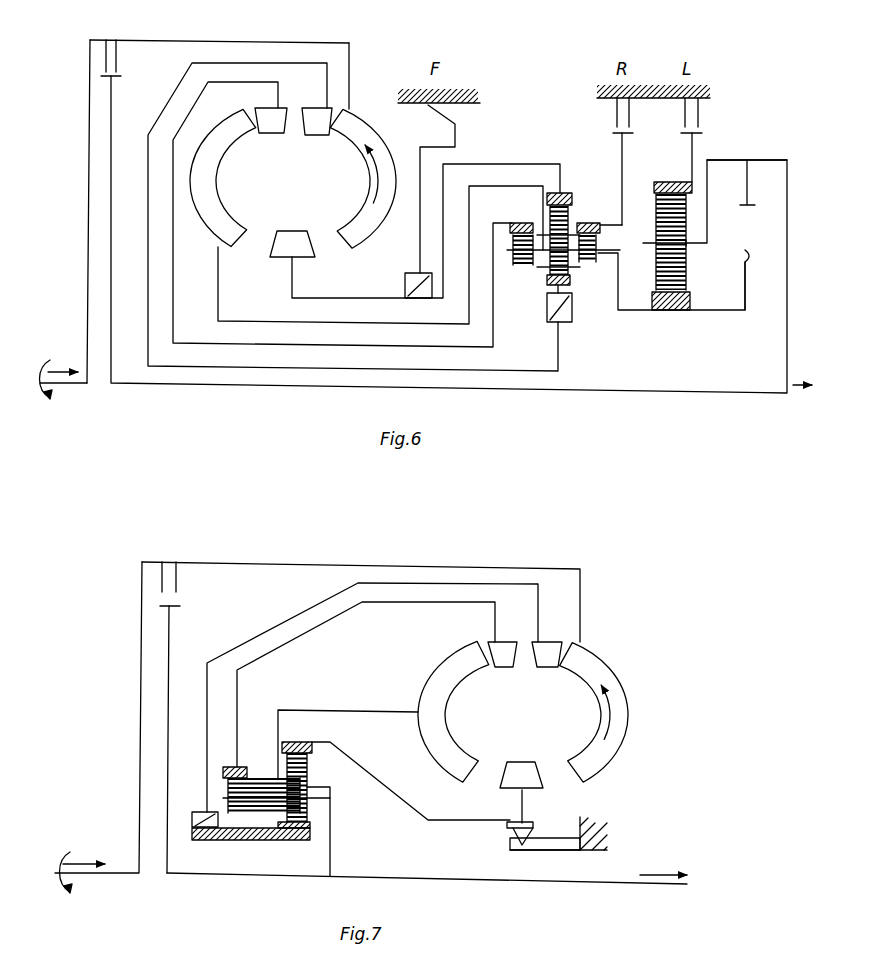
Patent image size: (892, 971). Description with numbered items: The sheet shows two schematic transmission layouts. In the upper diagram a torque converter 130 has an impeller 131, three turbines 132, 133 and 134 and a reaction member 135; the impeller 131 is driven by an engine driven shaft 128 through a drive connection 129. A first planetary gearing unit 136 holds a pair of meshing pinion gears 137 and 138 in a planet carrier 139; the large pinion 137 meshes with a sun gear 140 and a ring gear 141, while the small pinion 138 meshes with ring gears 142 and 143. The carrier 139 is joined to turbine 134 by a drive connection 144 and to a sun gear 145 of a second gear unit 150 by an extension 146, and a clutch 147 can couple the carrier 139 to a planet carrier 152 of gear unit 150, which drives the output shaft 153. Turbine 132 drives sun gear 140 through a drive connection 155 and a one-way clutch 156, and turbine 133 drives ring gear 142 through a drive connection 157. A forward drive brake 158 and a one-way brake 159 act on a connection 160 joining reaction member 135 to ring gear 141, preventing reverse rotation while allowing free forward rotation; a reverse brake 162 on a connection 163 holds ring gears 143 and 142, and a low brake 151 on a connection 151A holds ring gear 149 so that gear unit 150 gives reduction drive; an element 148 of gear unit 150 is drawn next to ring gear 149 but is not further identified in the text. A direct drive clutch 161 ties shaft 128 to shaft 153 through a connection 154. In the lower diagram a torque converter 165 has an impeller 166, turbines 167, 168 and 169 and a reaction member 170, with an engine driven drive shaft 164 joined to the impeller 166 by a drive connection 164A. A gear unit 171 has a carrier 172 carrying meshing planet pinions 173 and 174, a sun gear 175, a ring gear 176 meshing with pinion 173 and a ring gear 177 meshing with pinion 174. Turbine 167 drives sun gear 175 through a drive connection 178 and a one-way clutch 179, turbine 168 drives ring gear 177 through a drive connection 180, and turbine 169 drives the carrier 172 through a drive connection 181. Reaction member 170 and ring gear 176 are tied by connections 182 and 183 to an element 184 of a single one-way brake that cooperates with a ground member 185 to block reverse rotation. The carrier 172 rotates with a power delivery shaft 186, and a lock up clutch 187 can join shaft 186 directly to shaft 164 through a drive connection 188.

In FIG. 6, the engine driven shaft 128 is at (87, 385).
In FIG. 6, the drive connection 129 is at (93, 40).
In FIG. 6, the torque converter 130 is at (356, 106).
In FIG. 6, the impeller 131 is at (368, 163).
In FIG. 6, the turbine 132 is at (316, 127).
In FIG. 6, the turbine 133 is at (272, 125).
In FIG. 6, the turbine 134 is at (208, 170).
In FIG. 6, the reaction member 135 is at (292, 240).
In FIG. 6, the first planetary gearing unit 136 is at (538, 163).
In FIG. 6, the large diameter pinion gear 137 is at (572, 222).
In FIG. 6, the small diameter pinion gear 138 is at (535, 262).
In FIG. 6, the planet carrier 139 is at (618, 305).
In FIG. 6, the sun gear 140 is at (549, 284).
In FIG. 6, the ring gear 141 is at (562, 196).
In FIG. 6, the ring gear 142 is at (520, 222).
In FIG. 6, the ring gear 143 is at (600, 232).
In FIG. 6, the drive connection 144 is at (280, 320).
In FIG. 6, the sun gear 145 is at (690, 298).
In FIG. 6, the extension 146 is at (748, 255).
In FIG. 6, the clutch 147 is at (750, 168).
In FIG. 6, the coil 148 is at (658, 272).
In FIG. 6, the ring gear 149 is at (671, 181).
In FIG. 6, the second gear unit 150 is at (688, 260).
In FIG. 6, the low brake 151 is at (702, 118).
In FIG. 6, the connection 151A is at (692, 150).
In FIG. 6, the planet carrier 152 is at (707, 235).
In FIG. 6, the shaft 153 is at (710, 395).
In FIG. 6, the connection 154 is at (111, 165).
In FIG. 6, the drive connection 155 is at (148, 243).
In FIG. 6, the one-way clutch 156 is at (565, 312).
In FIG. 6, the drive connection 157 is at (223, 342).
In FIG. 6, the forward drive brake 158 is at (440, 118).
In FIG. 6, the one-way brake 159 is at (412, 275).
In FIG. 6, the connection 160 is at (322, 297).
In FIG. 6, the direct drive clutch 161 is at (122, 58).
In FIG. 6, the reverse brake 162 is at (615, 115).
In FIG. 6, the connection 163 is at (622, 155).
In FIG. 7, the engine driven drive shaft 164 is at (117, 876).
In FIG. 7, the drive connection 164A is at (287, 562).
In FIG. 7, the torque converter 165 is at (630, 690).
In FIG. 7, the impeller 166 is at (605, 720).
In FIG. 7, the turbine 167 is at (546, 663).
In FIG. 7, the turbine 168 is at (500, 660).
In FIG. 7, the turbine 169 is at (447, 702).
In FIG. 7, the reaction member 170 is at (520, 768).
In FIG. 7, the gear unit 171 is at (334, 803).
In FIG. 7, the carrier 172 is at (330, 826).
In FIG. 7, the large diameter pinion 173 is at (308, 764).
In FIG. 7, the small diameter pinion 174 is at (256, 783).
In FIG. 7, the sun gear 175 is at (290, 841).
In FIG. 7, the ring gear 176 is at (300, 743).
In FIG. 7, the ring gear 177 is at (240, 766).
In FIG. 7, the drive connection 178 is at (268, 622).
In FIG. 7, the one-way clutch 179 is at (206, 822).
In FIG. 7, the drive connection 180 is at (300, 632).
In FIG. 7, the drive connection 181 is at (350, 712).
In FIG. 7, the connection 182 is at (520, 805).
In FIG. 7, the connection 183 is at (418, 812).
In FIG. 7, the one-way brake element 184 is at (537, 830).
In FIG. 7, the ground member 185 is at (560, 845).
In FIG. 7, the power delivery shaft 186 is at (537, 885).
In FIG. 7, the direct drive lock up clutch 187 is at (182, 580).
In FIG. 7, the drive connection 188 is at (170, 620).